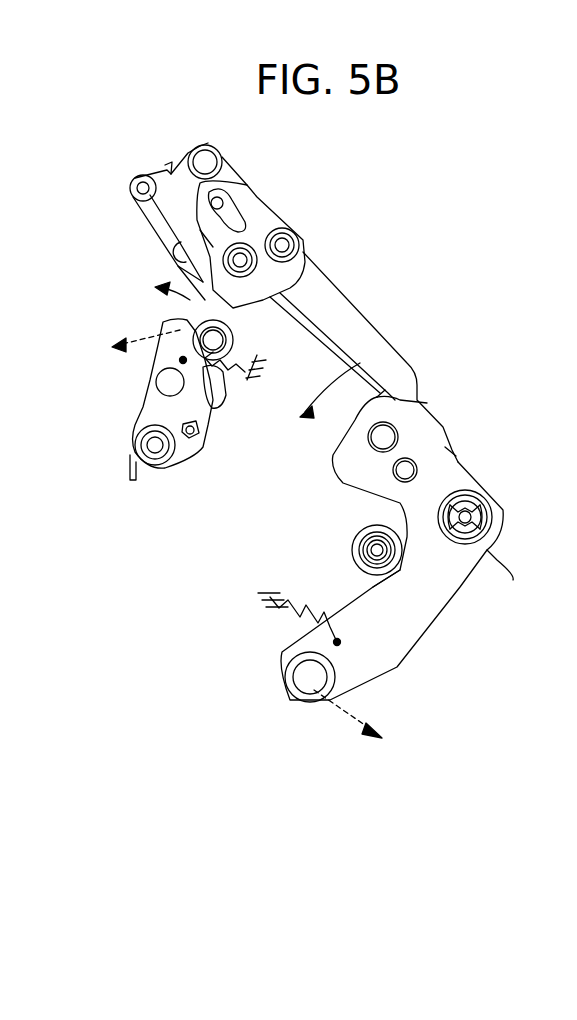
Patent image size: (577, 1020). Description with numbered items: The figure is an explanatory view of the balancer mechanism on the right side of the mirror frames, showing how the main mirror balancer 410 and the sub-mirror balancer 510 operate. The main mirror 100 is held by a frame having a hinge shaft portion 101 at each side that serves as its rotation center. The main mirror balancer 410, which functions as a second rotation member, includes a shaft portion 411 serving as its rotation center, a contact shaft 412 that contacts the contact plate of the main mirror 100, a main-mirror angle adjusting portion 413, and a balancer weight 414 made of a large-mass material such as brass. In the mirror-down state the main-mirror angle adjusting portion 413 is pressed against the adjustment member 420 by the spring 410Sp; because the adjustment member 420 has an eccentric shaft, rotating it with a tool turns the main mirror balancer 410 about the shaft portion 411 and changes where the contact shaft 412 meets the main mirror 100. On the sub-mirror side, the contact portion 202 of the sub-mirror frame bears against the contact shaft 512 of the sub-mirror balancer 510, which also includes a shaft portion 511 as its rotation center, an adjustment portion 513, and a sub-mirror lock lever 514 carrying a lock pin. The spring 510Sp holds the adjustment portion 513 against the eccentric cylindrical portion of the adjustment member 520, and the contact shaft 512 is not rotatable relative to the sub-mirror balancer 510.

The main mirror 100 is at (338, 333).
The hinge shaft portion 101 is at (130, 184).
The contact portion 202 is at (210, 405).
The main mirror balancer 410 is at (413, 627).
The spring 410Sp is at (273, 620).
The shaft portion 411 is at (467, 527).
The contact shaft 412 is at (385, 437).
The main-mirror angle adjusting portion 413 is at (373, 583).
The balancer weight 414 is at (310, 680).
The adjustment member 420 is at (367, 550).
The sub-mirror balancer 510 is at (168, 363).
The spring 510Sp is at (247, 387).
The shaft portion 511 is at (143, 455).
The contact shaft 512 is at (170, 388).
The adjustment portion 513 is at (165, 321).
The sub-mirror lock lever 514 is at (190, 445).
The adjustment member 520 is at (253, 300).